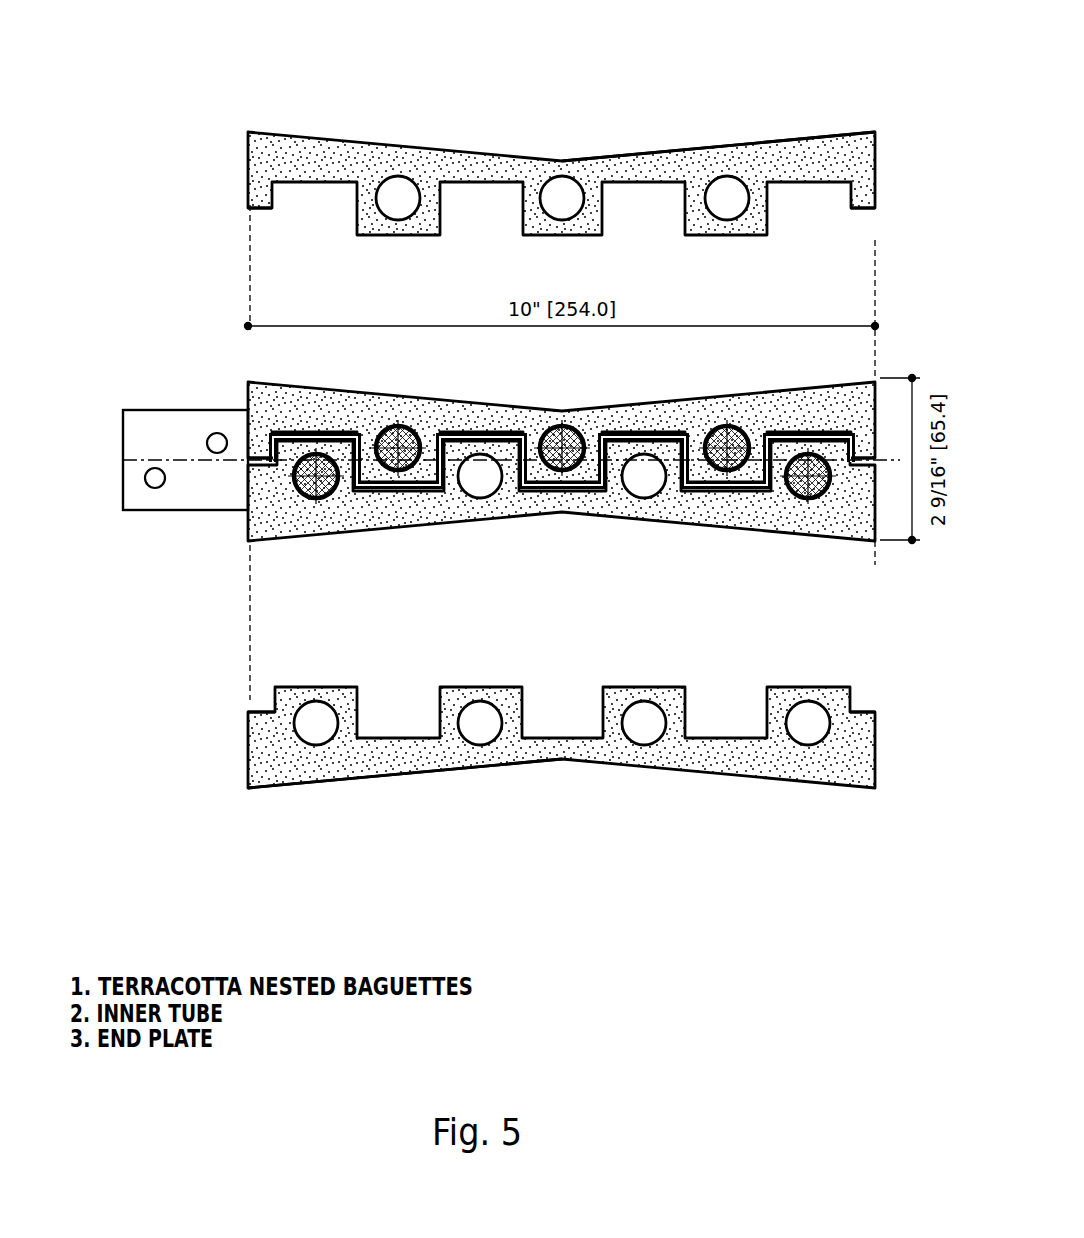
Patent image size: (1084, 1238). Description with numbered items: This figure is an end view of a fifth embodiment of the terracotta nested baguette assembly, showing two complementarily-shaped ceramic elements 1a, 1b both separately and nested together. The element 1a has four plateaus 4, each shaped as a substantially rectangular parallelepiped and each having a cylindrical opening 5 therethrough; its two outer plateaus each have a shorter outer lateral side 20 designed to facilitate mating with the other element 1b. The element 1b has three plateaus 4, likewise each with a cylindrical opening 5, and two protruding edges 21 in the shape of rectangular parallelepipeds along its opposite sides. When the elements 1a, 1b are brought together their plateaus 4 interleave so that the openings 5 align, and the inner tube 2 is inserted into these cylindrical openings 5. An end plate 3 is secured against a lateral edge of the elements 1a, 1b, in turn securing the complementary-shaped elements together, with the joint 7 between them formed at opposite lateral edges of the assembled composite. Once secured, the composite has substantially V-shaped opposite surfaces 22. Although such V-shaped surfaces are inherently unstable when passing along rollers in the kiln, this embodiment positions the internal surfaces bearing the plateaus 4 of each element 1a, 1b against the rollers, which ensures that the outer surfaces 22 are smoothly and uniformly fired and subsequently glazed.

The ceramic element 1a is at (248, 747).
The ceramic element 1b is at (248, 193).
The inner tube 2 is at (248, 478).
The end plate 3 is at (124, 430).
The plateau 4 is at (395, 237).
The cylindrical opening 5 is at (397, 198).
The joint 7 is at (248, 461).
The shorter outer lateral side 20 is at (270, 700).
The protruding edge 21 is at (257, 208).
The substantially V-shaped opposite surface 22 is at (650, 150).